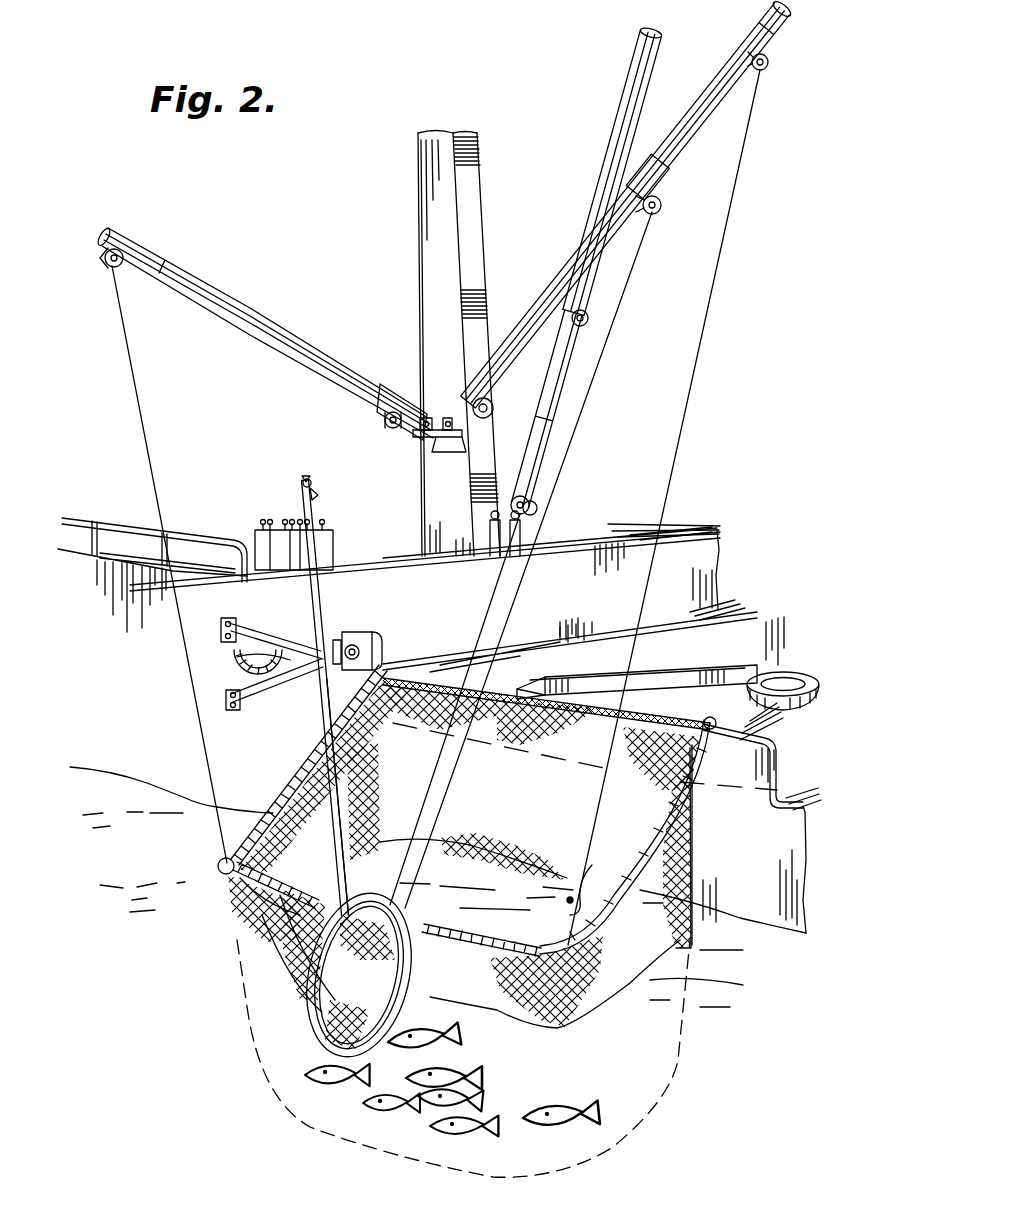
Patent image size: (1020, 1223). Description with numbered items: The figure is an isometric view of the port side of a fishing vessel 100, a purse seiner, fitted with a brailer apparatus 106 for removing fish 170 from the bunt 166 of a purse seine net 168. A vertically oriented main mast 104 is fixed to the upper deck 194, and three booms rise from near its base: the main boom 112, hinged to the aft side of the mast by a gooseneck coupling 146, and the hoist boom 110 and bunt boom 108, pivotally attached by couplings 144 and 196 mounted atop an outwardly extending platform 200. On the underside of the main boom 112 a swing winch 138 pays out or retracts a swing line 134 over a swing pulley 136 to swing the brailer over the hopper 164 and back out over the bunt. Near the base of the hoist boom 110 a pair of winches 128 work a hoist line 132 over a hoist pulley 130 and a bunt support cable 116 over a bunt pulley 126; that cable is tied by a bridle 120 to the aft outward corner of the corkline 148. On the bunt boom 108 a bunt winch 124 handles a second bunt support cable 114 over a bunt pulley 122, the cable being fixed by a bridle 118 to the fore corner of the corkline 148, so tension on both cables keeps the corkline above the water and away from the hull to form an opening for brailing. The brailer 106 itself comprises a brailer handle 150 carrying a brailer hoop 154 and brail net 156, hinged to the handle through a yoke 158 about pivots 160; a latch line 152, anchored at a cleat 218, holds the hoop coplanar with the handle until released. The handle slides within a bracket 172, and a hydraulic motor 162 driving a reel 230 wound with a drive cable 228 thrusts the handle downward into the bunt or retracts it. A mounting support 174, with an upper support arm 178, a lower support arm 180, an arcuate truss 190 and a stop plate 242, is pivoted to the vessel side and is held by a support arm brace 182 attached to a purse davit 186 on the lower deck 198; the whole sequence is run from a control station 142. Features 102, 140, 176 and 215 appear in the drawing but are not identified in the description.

The fishing vessel 100 is at (138, 674).
The hull 102 is at (163, 979).
The main mast 104 is at (460, 364).
The brailer apparatus 106 is at (467, 854).
The bunt boom 108 is at (215, 276).
The hoist boom 110 is at (722, 82).
The main boom 112 is at (634, 80).
The bunt support cable 114 is at (150, 418).
The bunt support cable 116 is at (700, 372).
The bridle 118 is at (222, 860).
The bridle 120 is at (600, 876).
The bunt pulley 122 is at (124, 267).
The bunt winch 124 is at (388, 428).
The bunt pulley 126 is at (768, 67).
The powered winches 128 is at (477, 392).
The hoist pulley 130 is at (661, 200).
The hoist line 132 is at (590, 404).
The swing line 134 is at (494, 612).
The swing pulley 136 is at (590, 318).
The swing winch 138 is at (540, 510).
The hoop ring 140 is at (410, 968).
The control station 142 is at (333, 546).
The coupling 144 is at (422, 440).
The coupling 146 is at (508, 556).
The corkline 148 is at (693, 815).
The brailer handle 150 is at (300, 504).
The latch line 152 is at (311, 486).
The brailer hoop 154 is at (390, 867).
The brail net 156 is at (240, 946).
The yoke 158 is at (317, 987).
The pivots 160 is at (313, 1027).
The hydraulic motor 162 is at (382, 652).
The hopper 164 is at (718, 660).
The bunt 166 is at (676, 1072).
The purse seine net 168 is at (280, 1114).
The fish 170 is at (410, 1062).
The bracket 172 is at (310, 646).
The mounting support 174 is at (212, 652).
The side bar of net frame 176 is at (335, 880).
The upper support arm 178 is at (266, 626).
The lower support arm 180 is at (258, 712).
The support arm brace 182 is at (340, 634).
The purse davit 186 is at (370, 630).
The arcuate truss 190 is at (237, 657).
The upper deck 194 is at (598, 538).
The coupling 196 is at (438, 403).
The lower deck 198 is at (592, 671).
The platform 200 is at (458, 454).
The tip 215 is at (300, 475).
The cleat 218 is at (318, 494).
The drive cable 228 is at (350, 760).
The reel 230 is at (373, 692).
The stop plate 242 is at (323, 733).